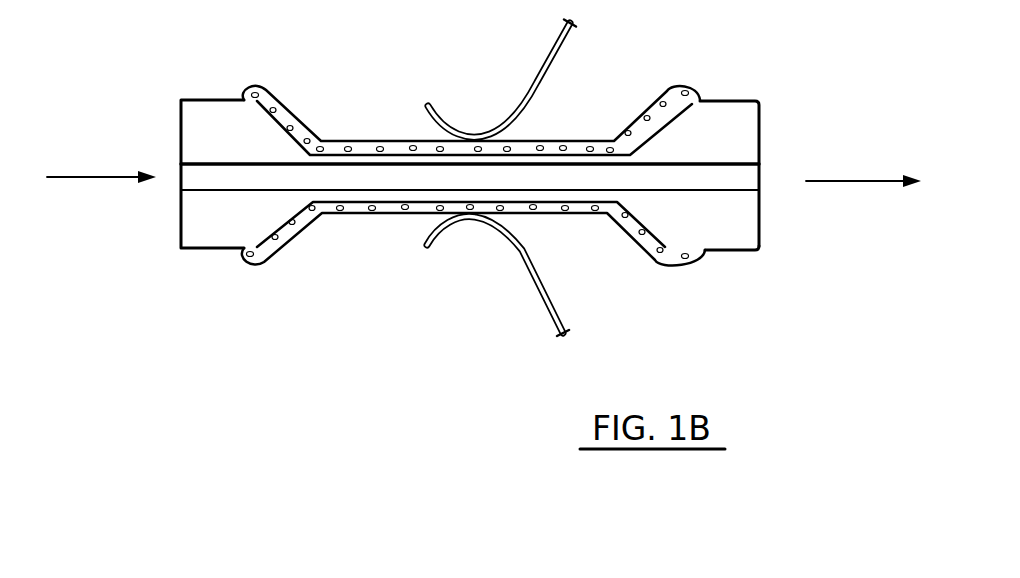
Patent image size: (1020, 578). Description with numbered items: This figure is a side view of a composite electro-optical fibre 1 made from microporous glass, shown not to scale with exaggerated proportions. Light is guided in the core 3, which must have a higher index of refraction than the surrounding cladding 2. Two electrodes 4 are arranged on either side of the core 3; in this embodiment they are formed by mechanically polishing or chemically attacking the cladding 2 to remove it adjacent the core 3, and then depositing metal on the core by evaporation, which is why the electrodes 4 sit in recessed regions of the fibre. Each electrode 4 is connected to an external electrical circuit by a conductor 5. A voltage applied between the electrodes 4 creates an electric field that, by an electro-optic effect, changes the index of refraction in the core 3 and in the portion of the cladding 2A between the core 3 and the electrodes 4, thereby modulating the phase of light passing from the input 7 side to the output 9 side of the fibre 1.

The electro-optical fibre 1 is at (736, 252).
The cladding 2 is at (702, 118).
The portion of the cladding 2A is at (563, 162).
The core 3 is at (743, 177).
The electrodes 4 is at (333, 147).
The conductors 5 is at (540, 60).
The inlet flow direction 7 is at (78, 176).
The outlet flow direction 9 is at (870, 181).